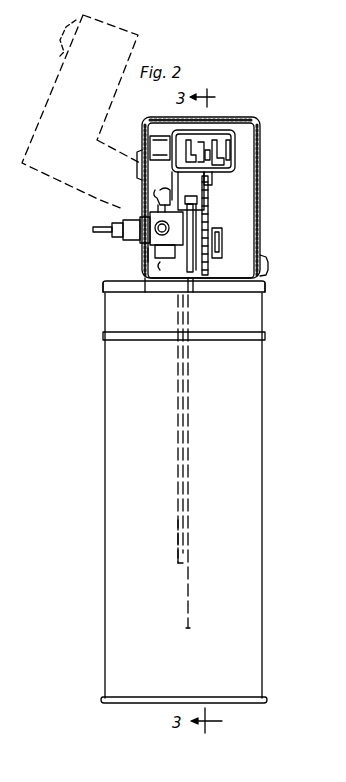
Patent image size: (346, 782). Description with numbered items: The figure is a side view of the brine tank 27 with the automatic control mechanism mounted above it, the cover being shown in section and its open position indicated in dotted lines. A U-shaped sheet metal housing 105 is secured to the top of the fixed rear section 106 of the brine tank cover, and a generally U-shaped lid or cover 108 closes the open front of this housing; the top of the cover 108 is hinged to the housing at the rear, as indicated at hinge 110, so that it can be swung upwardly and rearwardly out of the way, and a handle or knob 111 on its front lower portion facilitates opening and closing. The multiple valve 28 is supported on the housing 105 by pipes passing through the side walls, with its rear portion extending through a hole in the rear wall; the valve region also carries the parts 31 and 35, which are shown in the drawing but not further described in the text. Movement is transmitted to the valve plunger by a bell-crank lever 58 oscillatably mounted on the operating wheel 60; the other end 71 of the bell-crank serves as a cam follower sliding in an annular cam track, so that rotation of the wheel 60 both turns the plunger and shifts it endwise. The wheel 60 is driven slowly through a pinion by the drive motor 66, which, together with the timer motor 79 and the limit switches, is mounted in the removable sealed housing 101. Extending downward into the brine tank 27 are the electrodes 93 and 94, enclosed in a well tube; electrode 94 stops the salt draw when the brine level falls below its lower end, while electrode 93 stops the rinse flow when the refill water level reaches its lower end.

The brine tank 27 is at (262, 441).
The multiple valve 28 is at (147, 256).
The lever 31 is at (160, 174).
The valve body 35 is at (138, 244).
The bell-crank lever 58 is at (224, 249).
The operating wheel 60 is at (210, 207).
The drive motor 66 is at (190, 140).
The cam follower end of bell-crank 71 is at (193, 274).
The timer motor 79 is at (235, 141).
The electrode 93 is at (176, 524).
The electrode 94 is at (190, 482).
The housing 101 is at (240, 168).
The sheet metal housing 105 is at (147, 274).
The fixed rear section of cover 106 is at (104, 283).
The cover 108 is at (47, 98).
The hinge 110 is at (141, 168).
The handle or knob 111 is at (268, 270).